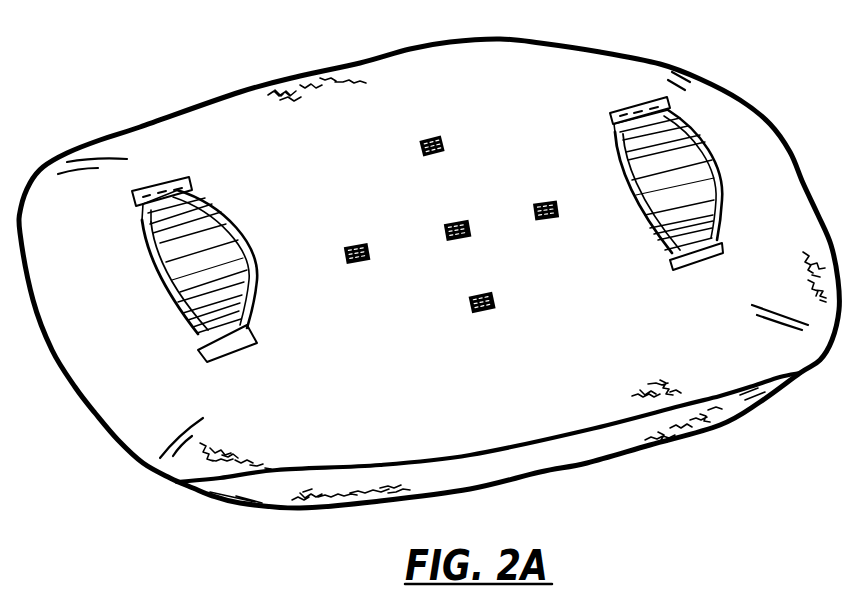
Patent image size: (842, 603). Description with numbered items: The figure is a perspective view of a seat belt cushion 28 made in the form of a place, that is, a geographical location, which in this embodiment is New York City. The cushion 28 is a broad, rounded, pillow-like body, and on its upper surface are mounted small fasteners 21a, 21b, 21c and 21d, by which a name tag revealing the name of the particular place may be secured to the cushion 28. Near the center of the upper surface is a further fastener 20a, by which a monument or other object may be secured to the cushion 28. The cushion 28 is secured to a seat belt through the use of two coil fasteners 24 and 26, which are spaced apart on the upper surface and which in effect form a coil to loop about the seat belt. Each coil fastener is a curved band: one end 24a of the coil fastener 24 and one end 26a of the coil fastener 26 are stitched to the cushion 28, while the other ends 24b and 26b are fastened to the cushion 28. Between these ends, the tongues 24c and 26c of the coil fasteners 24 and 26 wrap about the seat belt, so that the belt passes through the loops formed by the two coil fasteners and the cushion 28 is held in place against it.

The seat belt cushion 28 is at (397, 78).
The fastener 20a is at (450, 222).
The fastener 21a is at (433, 134).
The fastener 21b is at (353, 244).
The fastener 21c is at (483, 311).
The fastener 21d is at (543, 202).
The coil fastener 24 is at (203, 266).
The end of coil fastener 24a is at (170, 180).
The other end of coil fastener 24b is at (228, 343).
The tongue of coil fastener 24c is at (163, 277).
The coil fastener 26 is at (667, 187).
The end of coil fastener 26a is at (633, 103).
The other end of coil fastener 26b is at (700, 252).
The tongue of coil fastener 26c is at (640, 188).